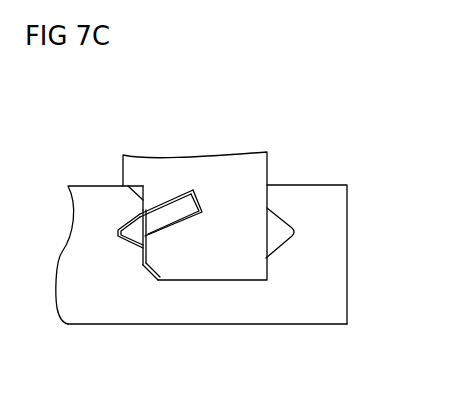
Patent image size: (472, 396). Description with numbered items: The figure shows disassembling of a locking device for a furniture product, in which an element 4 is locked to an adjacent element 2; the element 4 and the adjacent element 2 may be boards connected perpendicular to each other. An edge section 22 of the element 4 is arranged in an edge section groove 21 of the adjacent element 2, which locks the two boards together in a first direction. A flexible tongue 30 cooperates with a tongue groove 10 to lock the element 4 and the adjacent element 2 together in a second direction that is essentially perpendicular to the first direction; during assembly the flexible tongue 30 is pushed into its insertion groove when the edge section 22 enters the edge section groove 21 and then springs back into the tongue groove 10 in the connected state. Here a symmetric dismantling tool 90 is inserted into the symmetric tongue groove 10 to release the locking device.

The adjacent element 2 is at (224, 262).
The element 4 is at (204, 201).
The tongue groove 10 is at (145, 250).
The edge section groove 21 is at (152, 281).
The edge section 22 is at (217, 252).
The flexible tongue 30 is at (112, 166).
The dismantling tool 90 is at (128, 232).